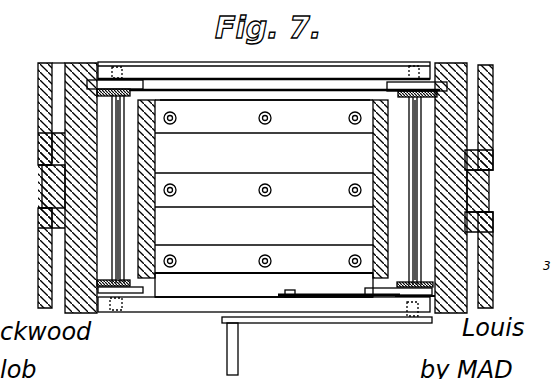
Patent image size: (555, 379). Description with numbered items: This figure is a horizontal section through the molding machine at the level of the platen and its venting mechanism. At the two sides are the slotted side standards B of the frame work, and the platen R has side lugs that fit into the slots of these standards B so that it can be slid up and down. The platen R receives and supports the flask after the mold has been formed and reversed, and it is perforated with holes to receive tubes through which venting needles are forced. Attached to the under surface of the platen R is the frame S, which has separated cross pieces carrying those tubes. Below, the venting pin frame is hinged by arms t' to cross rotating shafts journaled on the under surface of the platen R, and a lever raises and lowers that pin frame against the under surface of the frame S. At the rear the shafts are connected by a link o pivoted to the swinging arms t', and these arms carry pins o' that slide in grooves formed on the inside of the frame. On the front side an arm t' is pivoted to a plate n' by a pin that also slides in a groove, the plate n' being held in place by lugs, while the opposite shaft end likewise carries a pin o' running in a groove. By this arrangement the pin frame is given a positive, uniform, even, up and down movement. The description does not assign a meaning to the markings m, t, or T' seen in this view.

The side slotted standard B is at (38, 152).
The platen R is at (71, 54).
The link o is at (269, 67).
The pin o' is at (261, 187).
The rail plate m is at (356, 59).
The clamp plate t is at (116, 166).
The arm t' is at (289, 185).
The plate n' is at (339, 272).
The frame S is at (264, 285).
The bottom rail T' is at (264, 318).